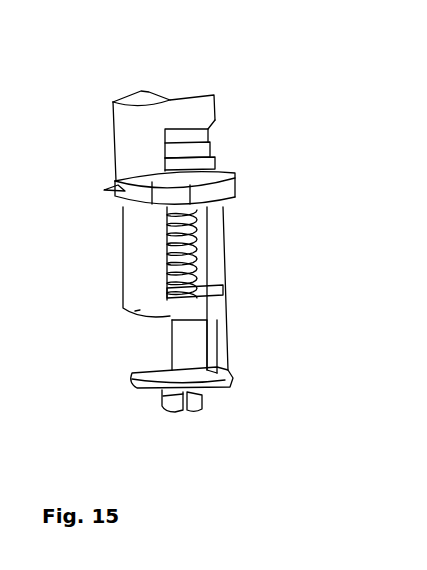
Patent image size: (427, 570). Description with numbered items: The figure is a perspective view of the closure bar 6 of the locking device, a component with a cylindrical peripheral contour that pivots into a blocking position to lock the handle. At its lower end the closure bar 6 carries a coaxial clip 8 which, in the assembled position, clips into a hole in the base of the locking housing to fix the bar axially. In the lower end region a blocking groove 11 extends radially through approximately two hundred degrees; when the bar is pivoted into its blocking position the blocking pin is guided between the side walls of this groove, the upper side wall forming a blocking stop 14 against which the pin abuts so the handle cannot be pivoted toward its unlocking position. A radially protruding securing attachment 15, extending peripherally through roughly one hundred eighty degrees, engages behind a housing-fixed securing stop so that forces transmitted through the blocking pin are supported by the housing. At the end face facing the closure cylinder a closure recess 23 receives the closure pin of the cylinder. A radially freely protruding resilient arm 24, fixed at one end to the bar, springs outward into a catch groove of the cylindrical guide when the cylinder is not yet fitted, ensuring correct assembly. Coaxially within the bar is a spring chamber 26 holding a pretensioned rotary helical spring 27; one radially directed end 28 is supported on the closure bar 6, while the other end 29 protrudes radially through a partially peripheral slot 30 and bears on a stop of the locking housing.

The closure bar 6 is at (296, 107).
The closure recess 23 is at (169, 99).
The resilient arm 24 is at (186, 153).
The other end of the helical spring 29 is at (108, 189).
The partially peripheral slot 30 is at (150, 186).
The securing attachment 15 is at (166, 203).
The blocking stop 14 is at (157, 318).
The helical spring 27 is at (193, 238).
The spring chamber 26 is at (197, 252).
The radially directed end of the helical spring 28 is at (196, 290).
The blocking groove 11 is at (157, 345).
The clip 8 is at (177, 400).